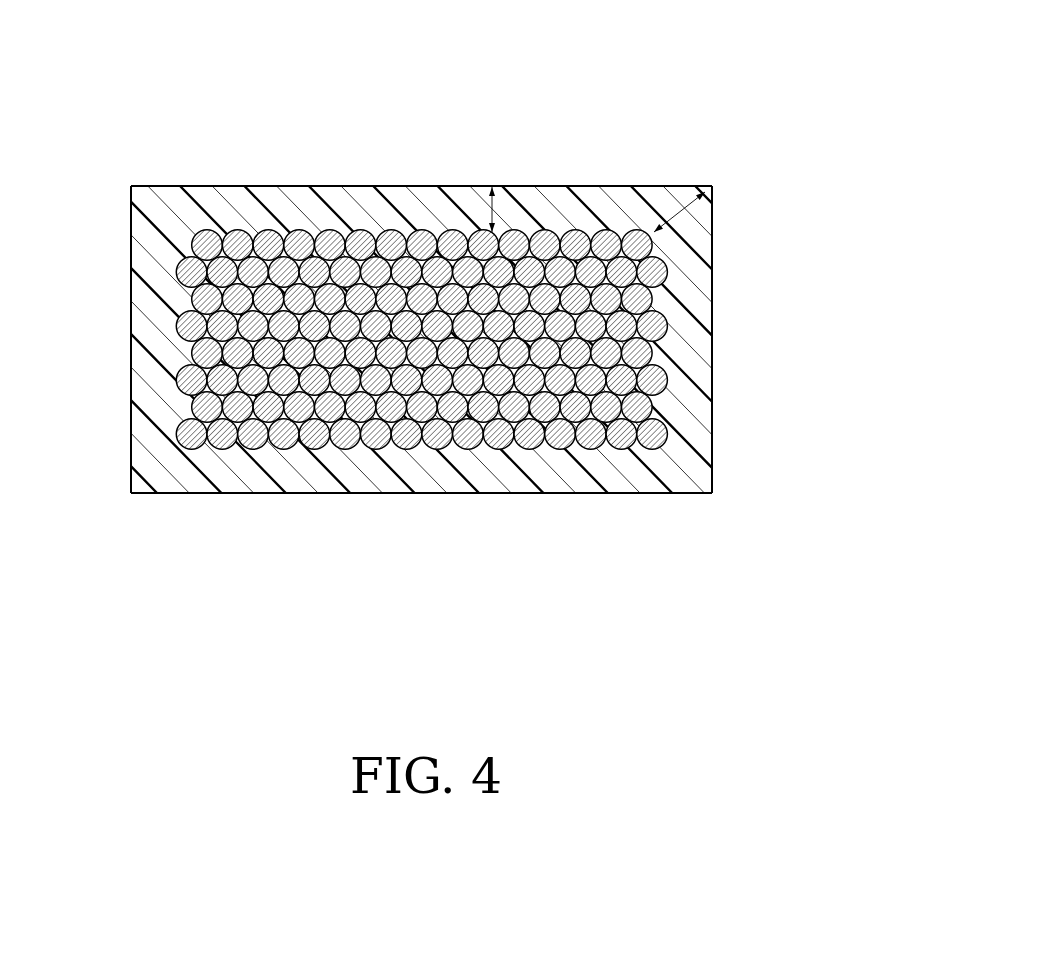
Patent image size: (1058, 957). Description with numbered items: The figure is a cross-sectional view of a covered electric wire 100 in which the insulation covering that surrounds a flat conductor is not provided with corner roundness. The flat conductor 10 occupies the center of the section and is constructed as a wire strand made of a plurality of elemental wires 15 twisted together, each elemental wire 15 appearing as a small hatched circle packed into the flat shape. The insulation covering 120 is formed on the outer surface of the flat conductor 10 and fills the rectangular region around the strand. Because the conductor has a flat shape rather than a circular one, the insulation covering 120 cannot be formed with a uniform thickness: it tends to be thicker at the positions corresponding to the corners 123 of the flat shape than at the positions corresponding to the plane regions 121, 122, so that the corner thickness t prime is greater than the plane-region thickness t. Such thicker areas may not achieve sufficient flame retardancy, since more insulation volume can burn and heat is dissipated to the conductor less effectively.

The covered electric wire 100 is at (497, 282).
The flat conductor 10 is at (412, 274).
The elemental wire 15 is at (227, 233).
The insulation covering 120 is at (435, 187).
The plane region 121 is at (548, 187).
The plane region 122 is at (131, 313).
The corner 123 is at (677, 215).